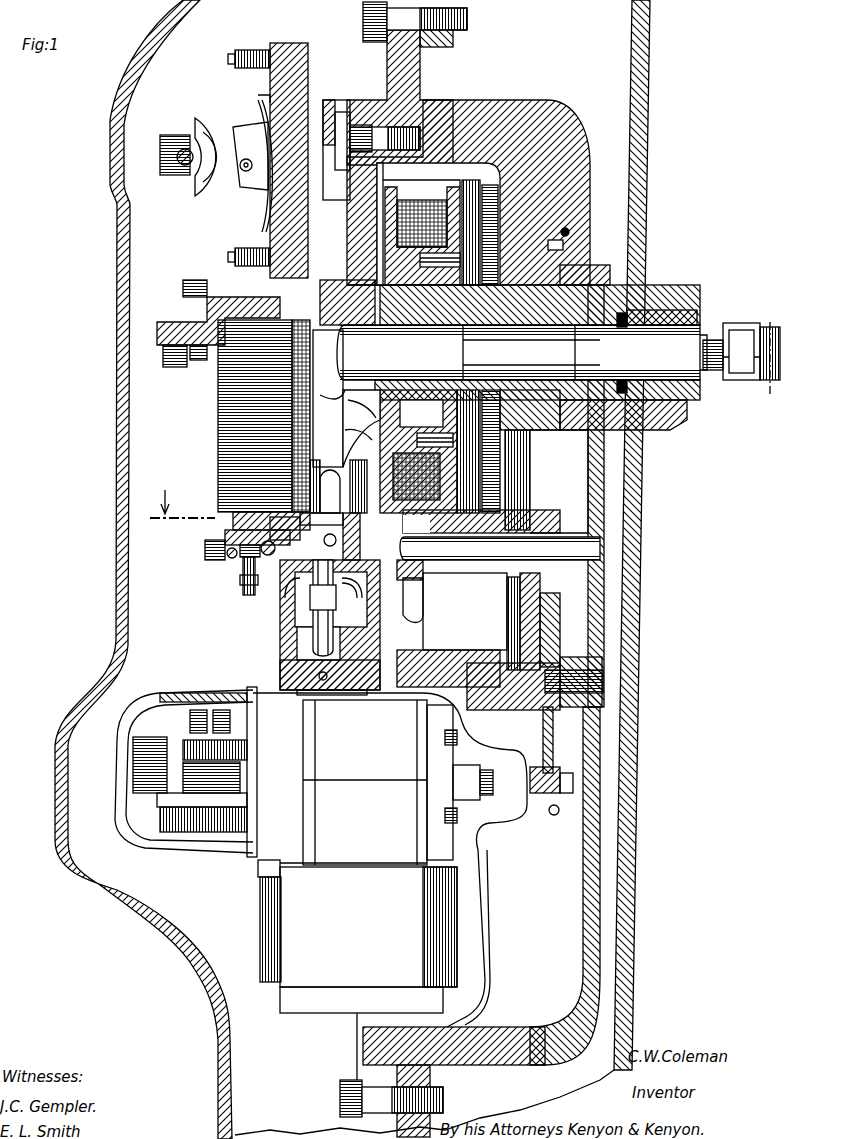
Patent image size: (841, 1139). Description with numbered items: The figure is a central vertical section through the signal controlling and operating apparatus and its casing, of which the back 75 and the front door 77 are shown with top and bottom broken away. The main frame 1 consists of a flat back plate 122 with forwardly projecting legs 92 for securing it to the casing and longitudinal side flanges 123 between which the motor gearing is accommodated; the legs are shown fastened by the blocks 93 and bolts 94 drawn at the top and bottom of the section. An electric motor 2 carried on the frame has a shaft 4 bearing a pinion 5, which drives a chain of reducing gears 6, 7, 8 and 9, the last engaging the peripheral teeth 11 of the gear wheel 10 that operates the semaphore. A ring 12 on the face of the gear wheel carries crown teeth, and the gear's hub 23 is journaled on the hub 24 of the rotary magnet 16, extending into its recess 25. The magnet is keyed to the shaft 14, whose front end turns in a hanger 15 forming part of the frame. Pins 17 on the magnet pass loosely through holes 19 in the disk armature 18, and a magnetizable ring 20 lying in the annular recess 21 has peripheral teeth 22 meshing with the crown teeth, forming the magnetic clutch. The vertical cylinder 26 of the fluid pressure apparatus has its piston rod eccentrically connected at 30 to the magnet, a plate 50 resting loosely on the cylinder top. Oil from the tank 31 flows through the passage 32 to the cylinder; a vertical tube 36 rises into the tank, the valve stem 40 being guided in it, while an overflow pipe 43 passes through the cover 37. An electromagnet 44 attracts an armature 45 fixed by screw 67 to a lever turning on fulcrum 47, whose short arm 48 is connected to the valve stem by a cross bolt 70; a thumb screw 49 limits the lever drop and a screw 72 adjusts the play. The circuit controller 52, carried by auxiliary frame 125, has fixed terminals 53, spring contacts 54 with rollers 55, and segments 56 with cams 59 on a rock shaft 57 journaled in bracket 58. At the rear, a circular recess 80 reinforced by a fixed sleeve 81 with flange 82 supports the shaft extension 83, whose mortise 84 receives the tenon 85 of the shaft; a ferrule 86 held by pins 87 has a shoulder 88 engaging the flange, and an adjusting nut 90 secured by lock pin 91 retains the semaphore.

The main frame 1 is at (450, 110).
The electric motor 2 is at (262, 905).
The motor shaft 4 is at (556, 815).
The pinion 5 is at (545, 796).
The reducing gear 6 is at (515, 722).
The reducing gear 7 is at (520, 705).
The reducing gear 8 is at (508, 610).
The reducing pinion 9 is at (472, 572).
The gear wheel 10 is at (590, 172).
The peripheral teeth 11 is at (490, 183).
The ring 12 is at (471, 182).
The shaft 14 is at (518, 352).
The hanger 15 is at (352, 236).
The rotary magnet 16 is at (380, 197).
The pins 17 is at (390, 269).
The armature 18 is at (520, 487).
The holes 19 is at (562, 230).
The ring of magnetizable metal 20 is at (481, 522).
The annular recess 21 is at (445, 195).
The peripheral teeth 22 is at (448, 185).
The hub of gear 23 is at (563, 245).
The hub of magnet 24 is at (596, 262).
The recess 25 is at (440, 451).
The vertical cylinder 26 is at (255, 490).
The eccentric connection 30 is at (345, 395).
The tank 31 is at (386, 614).
The passage 32 is at (280, 676).
The vertical tube 36 is at (283, 640).
The cover of reservoir 37 is at (357, 607).
The valve stem 40 is at (315, 608).
The overflow pipe 43 is at (335, 500).
The electromagnet 44 is at (218, 382).
The armature 45 is at (245, 570).
The fulcrum 47 is at (265, 595).
The short arm 48 is at (225, 493).
The thumb screw 49 is at (250, 597).
The plate 50 is at (262, 455).
The circuit controller 52 is at (289, 146).
The fixed terminals 53 is at (262, 95).
The spring contacts 54 is at (262, 210).
The rollers 55 is at (245, 172).
The segments 56 is at (195, 120).
The rock shaft 57 is at (182, 177).
The bracket 58 is at (243, 135).
The cams 59 is at (222, 192).
The screw 67 is at (230, 590).
The cross bolt 70 is at (340, 542).
The screw 72 is at (207, 560).
The back of casing 75 is at (636, 640).
The front of casing 77 is at (112, 553).
The circular recess 80 is at (652, 285).
The fixed sleeve 81 is at (656, 296).
The flange 82 is at (692, 313).
The shaft extension 83 is at (676, 352).
The mortise 84 is at (575, 349).
The tenon 85 is at (531, 351).
The ferrule 86 is at (700, 392).
The pins 87 is at (643, 430).
The annular shoulder 88 is at (693, 393).
The adjusting nut 90 is at (749, 340).
The lock pin 91 is at (768, 398).
The projecting legs 92 is at (375, 1049).
The block 93 is at (435, 1080).
The bolt 94 is at (340, 1098).
The back plate 122 is at (597, 727).
The side flanges 123 is at (488, 910).
The auxiliary frame 125 is at (328, 112).